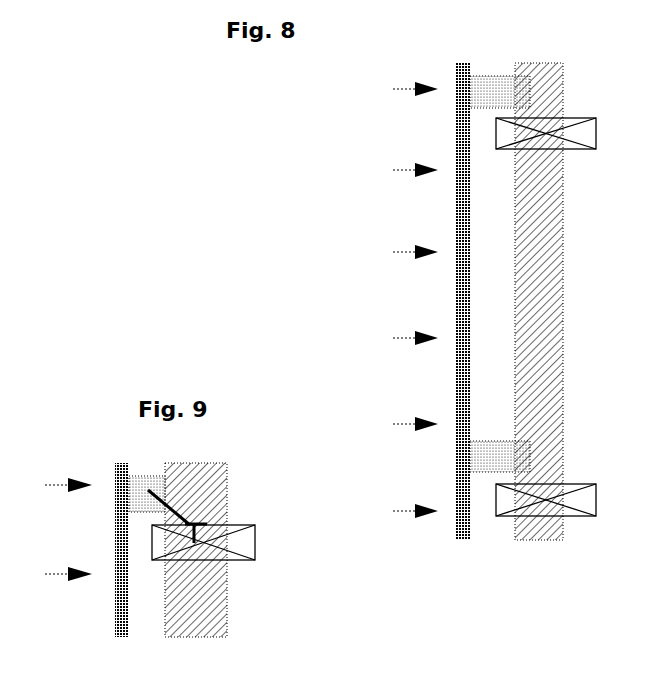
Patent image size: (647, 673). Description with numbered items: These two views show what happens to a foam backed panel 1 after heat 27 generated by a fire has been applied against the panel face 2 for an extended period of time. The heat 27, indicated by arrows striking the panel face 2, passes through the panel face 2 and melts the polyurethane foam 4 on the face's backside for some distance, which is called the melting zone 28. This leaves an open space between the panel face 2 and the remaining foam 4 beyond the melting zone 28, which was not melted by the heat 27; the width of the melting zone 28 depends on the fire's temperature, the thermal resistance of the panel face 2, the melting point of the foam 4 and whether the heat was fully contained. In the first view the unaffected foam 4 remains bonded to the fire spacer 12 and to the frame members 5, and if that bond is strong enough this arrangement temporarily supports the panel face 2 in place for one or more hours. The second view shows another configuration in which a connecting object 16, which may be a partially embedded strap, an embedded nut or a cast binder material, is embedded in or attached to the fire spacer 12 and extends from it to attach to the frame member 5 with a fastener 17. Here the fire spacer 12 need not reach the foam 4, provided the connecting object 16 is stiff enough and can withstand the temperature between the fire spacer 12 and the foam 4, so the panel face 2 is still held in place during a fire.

In FIG. 8, the foam backed panel 1 is at (447, 209).
In FIG. 8, the panel face 2 is at (455, 295).
In FIG. 9, the panel face 2 is at (110, 540).
In FIG. 8, the foam 4 is at (530, 338).
In FIG. 9, the foam 4 is at (190, 607).
In FIG. 8, the frame member 5 is at (572, 134).
In FIG. 9, the frame member 5 is at (228, 548).
In FIG. 8, the fire spacer 12 is at (493, 457).
In FIG. 9, the fire spacer 12 is at (155, 487).
In FIG. 9, the connecting object 16 is at (178, 500).
In FIG. 9, the fastener 17 is at (205, 527).
In FIG. 8, the heat 27 is at (408, 90).
In FIG. 9, the heat 27 is at (62, 580).
In FIG. 8, the melting zone 28 is at (481, 392).
In FIG. 9, the melting zone 28 is at (147, 597).